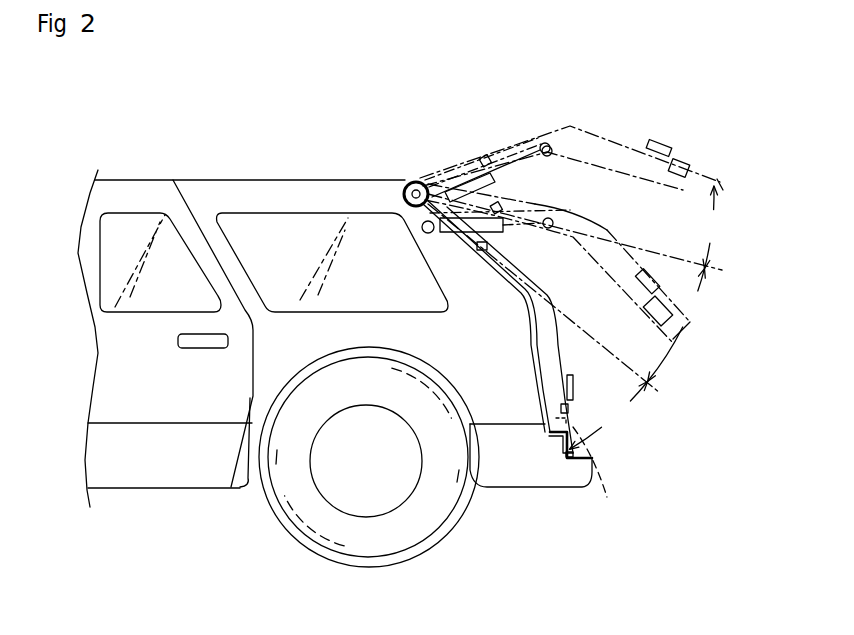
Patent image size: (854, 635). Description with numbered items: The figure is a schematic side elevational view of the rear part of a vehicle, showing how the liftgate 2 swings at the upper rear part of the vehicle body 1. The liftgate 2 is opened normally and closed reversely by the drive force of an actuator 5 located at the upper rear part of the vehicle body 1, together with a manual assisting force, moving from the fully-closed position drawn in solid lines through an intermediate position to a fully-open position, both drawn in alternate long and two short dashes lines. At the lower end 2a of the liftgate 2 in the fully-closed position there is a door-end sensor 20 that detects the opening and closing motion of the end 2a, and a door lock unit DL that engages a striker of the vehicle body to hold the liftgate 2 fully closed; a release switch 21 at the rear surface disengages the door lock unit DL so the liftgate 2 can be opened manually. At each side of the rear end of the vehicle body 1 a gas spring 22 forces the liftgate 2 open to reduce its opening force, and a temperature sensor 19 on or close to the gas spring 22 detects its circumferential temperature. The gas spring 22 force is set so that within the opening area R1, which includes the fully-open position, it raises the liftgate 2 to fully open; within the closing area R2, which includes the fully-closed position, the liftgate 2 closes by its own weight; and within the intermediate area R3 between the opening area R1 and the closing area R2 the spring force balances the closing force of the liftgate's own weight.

The vehicle body 1 is at (288, 180).
The liftgate 2 is at (612, 133).
The lower end 2a is at (555, 440).
The actuator 5 is at (412, 181).
The temperature sensor 19 is at (488, 246).
The door-end sensor 20 is at (572, 408).
The release switch 21 is at (573, 388).
The gas spring 22 is at (468, 175).
The opening area R1 is at (712, 227).
The closing area R2 is at (609, 416).
The intermediate area R3 is at (680, 325).
The door lock unit DL is at (603, 480).